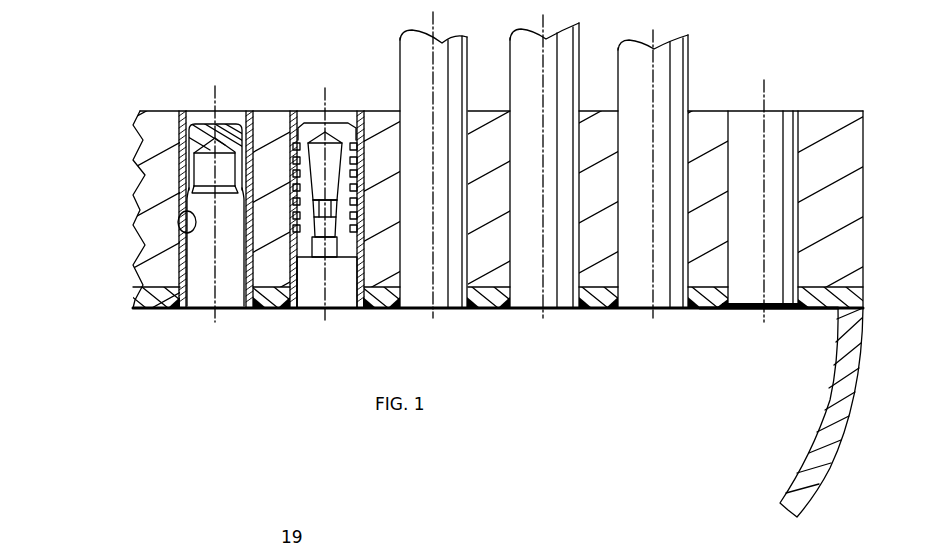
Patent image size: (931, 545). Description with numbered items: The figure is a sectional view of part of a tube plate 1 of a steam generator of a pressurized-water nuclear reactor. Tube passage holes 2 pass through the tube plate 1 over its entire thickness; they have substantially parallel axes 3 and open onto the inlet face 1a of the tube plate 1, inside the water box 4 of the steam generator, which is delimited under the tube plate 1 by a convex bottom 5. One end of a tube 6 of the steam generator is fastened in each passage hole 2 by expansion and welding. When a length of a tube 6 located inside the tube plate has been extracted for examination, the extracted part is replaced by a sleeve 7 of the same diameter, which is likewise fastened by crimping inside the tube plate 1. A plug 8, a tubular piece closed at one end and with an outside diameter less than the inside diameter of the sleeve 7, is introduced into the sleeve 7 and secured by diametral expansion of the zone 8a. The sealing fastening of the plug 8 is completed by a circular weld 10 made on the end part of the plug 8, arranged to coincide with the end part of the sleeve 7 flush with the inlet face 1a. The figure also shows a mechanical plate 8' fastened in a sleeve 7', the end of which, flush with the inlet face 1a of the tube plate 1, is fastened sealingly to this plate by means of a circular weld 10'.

The tube plate 1 is at (149, 118).
The inlet face 1a is at (160, 312).
The tube passage hole 2 is at (236, 121).
The axis 3 is at (222, 84).
The water box 4 is at (778, 364).
The convex bottom 5 is at (822, 443).
The tube 6 is at (457, 58).
The sleeve 7 is at (524, 193).
The sleeve 7' is at (327, 246).
The plug 8 is at (215, 199).
The mechanical plate 8' is at (327, 195).
The zone 8a is at (178, 216).
The circular weld 10 is at (215, 273).
The circular weld 10' is at (300, 308).